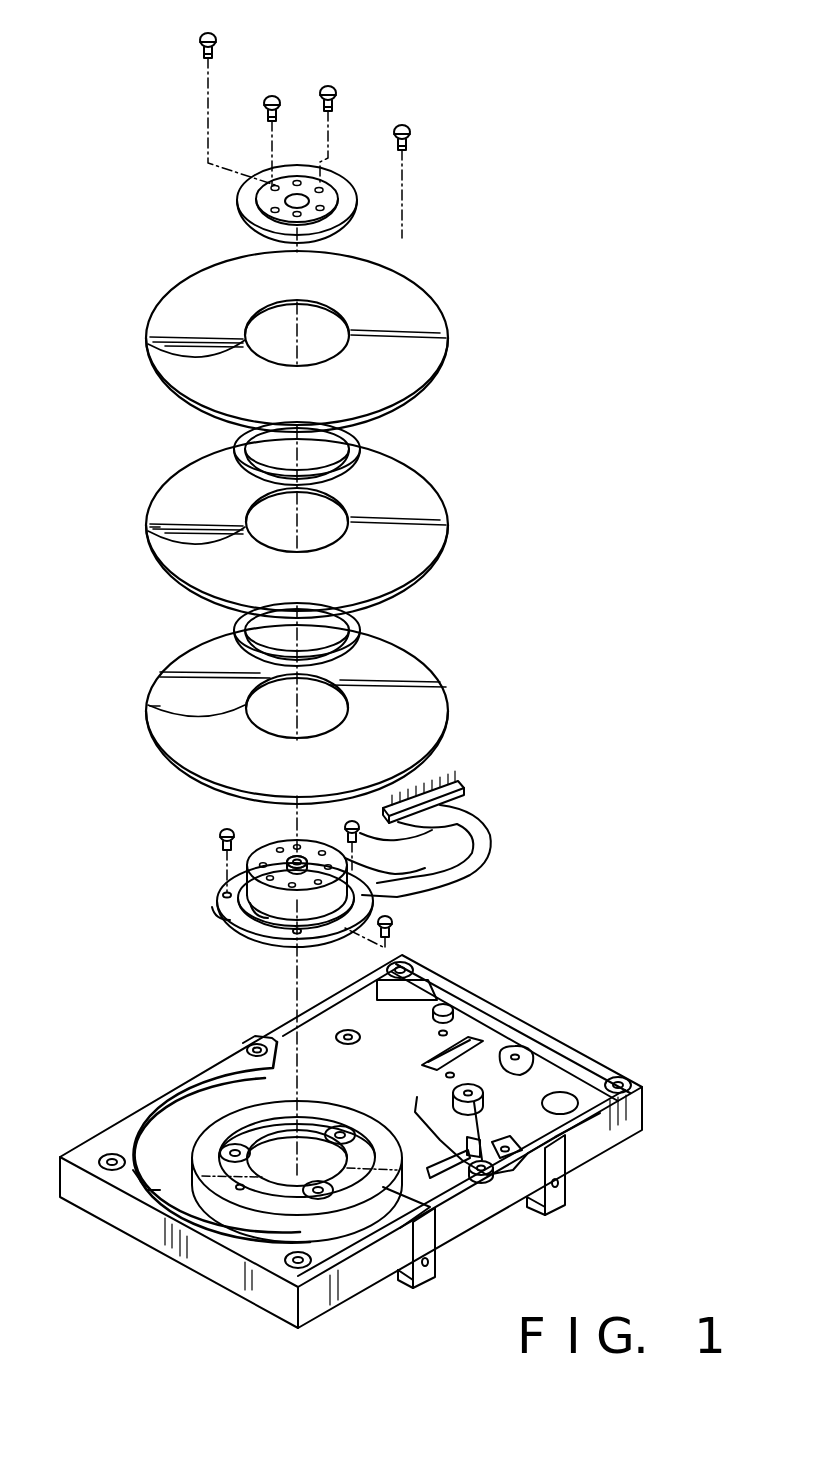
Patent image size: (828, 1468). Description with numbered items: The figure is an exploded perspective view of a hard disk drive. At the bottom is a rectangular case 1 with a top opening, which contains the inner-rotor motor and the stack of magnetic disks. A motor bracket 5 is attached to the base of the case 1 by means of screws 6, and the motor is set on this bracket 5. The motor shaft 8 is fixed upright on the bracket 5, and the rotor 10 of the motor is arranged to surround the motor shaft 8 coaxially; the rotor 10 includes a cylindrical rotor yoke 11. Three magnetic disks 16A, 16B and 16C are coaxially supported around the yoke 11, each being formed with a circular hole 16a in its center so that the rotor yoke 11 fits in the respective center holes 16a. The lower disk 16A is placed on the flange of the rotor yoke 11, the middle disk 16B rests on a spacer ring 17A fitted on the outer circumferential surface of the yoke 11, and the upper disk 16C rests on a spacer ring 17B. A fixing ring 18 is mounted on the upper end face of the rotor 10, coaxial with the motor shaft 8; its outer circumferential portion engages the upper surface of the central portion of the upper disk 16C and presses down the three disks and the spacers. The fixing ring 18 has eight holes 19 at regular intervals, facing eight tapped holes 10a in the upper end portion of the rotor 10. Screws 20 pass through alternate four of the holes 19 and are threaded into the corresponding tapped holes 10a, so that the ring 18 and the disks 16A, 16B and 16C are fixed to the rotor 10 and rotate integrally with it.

The case 1 is at (222, 1277).
The motor bracket 5 is at (235, 906).
The screws 6 is at (219, 836).
The motor shaft 8 is at (305, 856).
The rotor 10 is at (295, 882).
The tapped holes 10a is at (276, 852).
The rotor yoke 11 is at (272, 906).
The magnetic disk 16A is at (432, 706).
The magnetic disk 16B is at (432, 489).
The magnetic disk 16C is at (432, 353).
The circular hole 16a is at (147, 344).
The spacer ring 17A is at (234, 630).
The spacer ring 17B is at (234, 440).
The fixing ring 18 is at (340, 178).
The holes 19 is at (272, 211).
The screws 20 is at (324, 87).